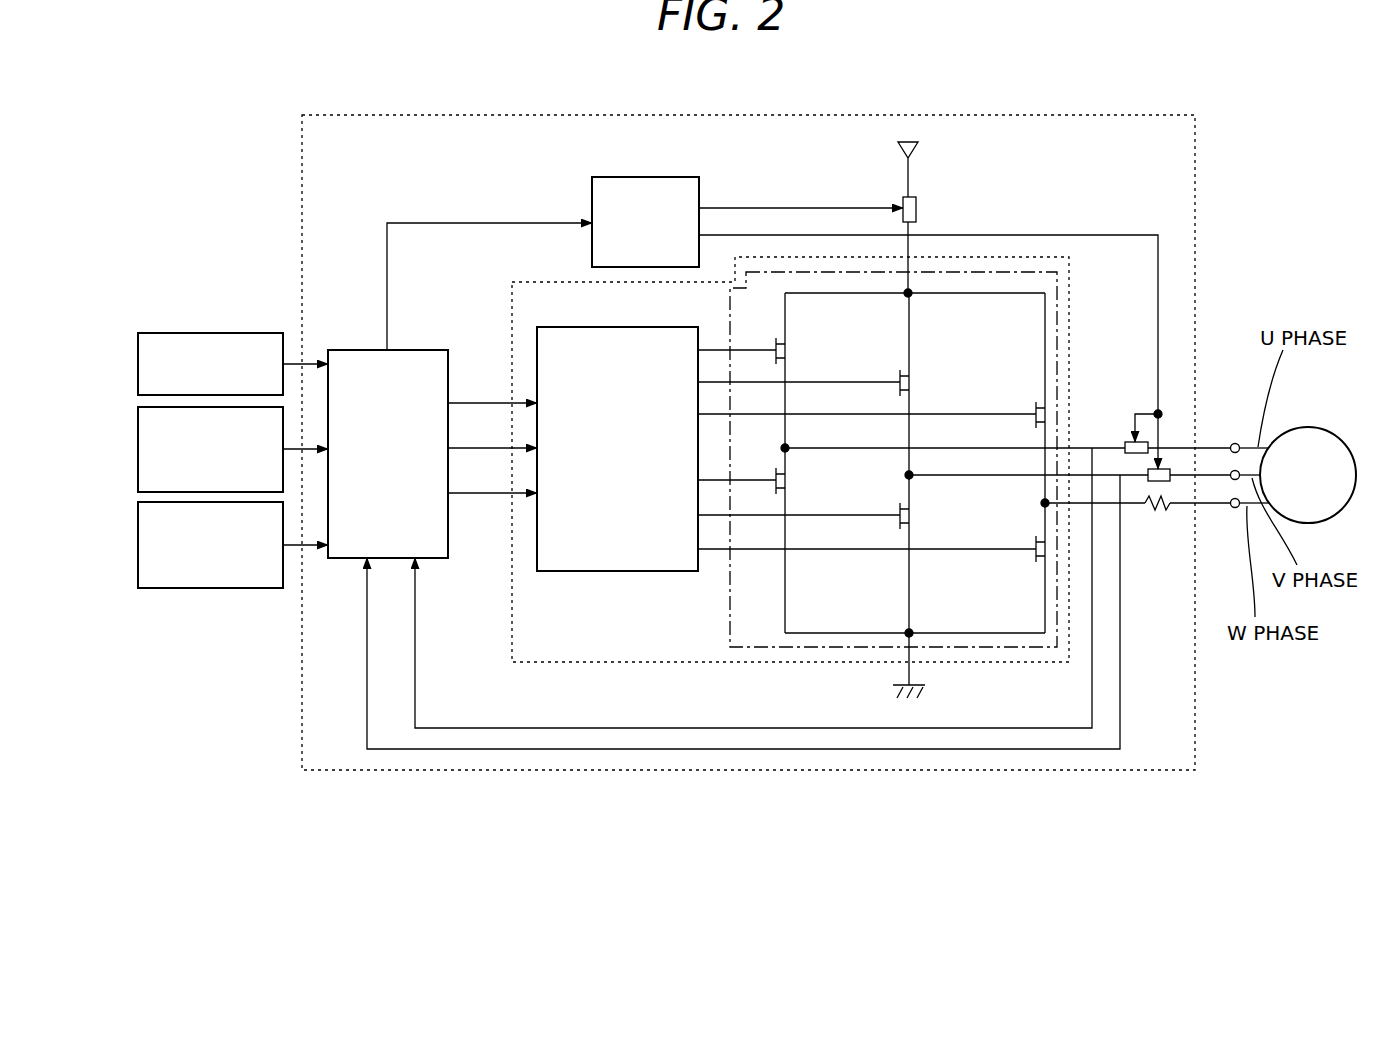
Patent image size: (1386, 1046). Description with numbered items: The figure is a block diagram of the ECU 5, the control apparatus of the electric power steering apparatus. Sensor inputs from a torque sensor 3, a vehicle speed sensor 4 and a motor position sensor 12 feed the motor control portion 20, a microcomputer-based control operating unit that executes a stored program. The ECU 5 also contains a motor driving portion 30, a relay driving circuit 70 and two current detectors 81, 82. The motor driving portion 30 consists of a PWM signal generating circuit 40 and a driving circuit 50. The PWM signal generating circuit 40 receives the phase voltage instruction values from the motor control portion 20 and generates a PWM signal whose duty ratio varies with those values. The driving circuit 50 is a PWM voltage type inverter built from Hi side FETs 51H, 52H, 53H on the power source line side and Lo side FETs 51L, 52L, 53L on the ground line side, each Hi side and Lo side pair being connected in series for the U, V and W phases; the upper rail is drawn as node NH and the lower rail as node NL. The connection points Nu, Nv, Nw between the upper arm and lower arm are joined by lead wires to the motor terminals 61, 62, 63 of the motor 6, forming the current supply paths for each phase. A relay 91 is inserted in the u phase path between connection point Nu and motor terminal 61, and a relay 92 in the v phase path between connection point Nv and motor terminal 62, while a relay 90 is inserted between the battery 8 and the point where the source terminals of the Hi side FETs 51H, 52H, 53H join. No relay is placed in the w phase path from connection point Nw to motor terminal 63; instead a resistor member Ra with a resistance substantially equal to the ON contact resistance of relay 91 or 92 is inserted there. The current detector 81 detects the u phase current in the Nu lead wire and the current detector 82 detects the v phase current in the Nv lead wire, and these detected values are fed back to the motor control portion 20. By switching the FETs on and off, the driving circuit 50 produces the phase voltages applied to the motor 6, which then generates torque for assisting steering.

The torque sensor 3 is at (138, 348).
The vehicle speed sensor 4 is at (138, 428).
The motor position sensor 12 is at (138, 524).
The motor control portion 20 is at (357, 350).
The ECU 5 is at (692, 115).
The relay driving circuit 70 is at (700, 195).
The battery 8 is at (918, 147).
The relay 90 is at (916, 208).
The motor driving portion 30 is at (567, 663).
The PWM signal generating circuit 40 is at (568, 571).
The driving circuit 50 is at (910, 485).
The FET 51H is at (776, 340).
The FET 51L is at (776, 470).
The FET 52H is at (900, 370).
The FET 52L is at (900, 505).
The FET 53H is at (1036, 404).
The FET 53L is at (1036, 538).
The current detector 81 is at (1092, 447).
The current detector 82 is at (1120, 474).
The relay 91 is at (1127, 441).
The relay 92 is at (1170, 468).
The motor terminal 61 is at (1232, 444).
The motor terminal 62 is at (1239, 470).
The motor terminal 63 is at (1236, 509).
The motor 6 is at (1313, 428).
The high-side node NH is at (912, 295).
The low-side node NL is at (912, 632).
The connection point Nu is at (790, 446).
The connection point Nv is at (913, 474).
The connection point Nw is at (1043, 503).
The resistor member Ra is at (1157, 512).